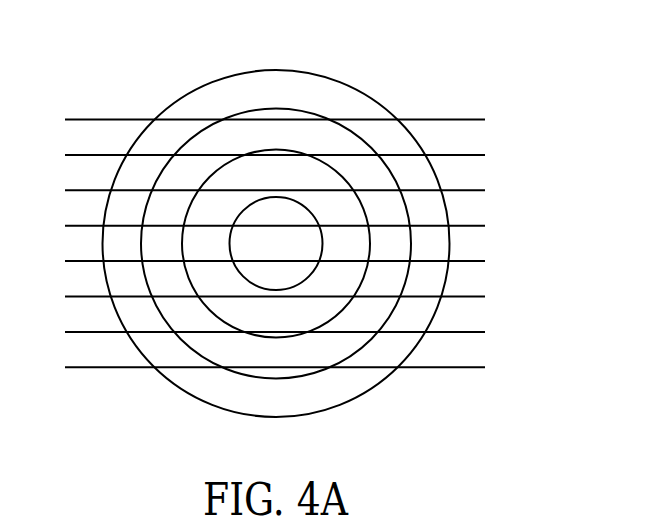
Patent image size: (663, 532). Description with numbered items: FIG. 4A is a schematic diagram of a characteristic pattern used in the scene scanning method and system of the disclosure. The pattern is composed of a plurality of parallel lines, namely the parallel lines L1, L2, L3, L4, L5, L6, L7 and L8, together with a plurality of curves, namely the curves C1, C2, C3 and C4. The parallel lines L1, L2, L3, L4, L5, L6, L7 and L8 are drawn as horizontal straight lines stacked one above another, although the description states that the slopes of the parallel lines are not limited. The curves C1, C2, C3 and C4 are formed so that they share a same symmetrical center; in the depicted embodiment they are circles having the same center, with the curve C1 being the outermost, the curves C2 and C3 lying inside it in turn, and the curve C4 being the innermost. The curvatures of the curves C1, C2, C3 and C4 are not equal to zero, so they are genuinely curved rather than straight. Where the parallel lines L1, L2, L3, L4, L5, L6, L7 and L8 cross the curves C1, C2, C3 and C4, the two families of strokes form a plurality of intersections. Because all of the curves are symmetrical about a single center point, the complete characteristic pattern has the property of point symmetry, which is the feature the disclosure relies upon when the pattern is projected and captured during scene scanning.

The curve C1 is at (337, 78).
The curve C2 is at (278, 108).
The curve C3 is at (263, 149).
The curve C4 is at (238, 213).
The parallel line L1 is at (477, 120).
The parallel line L2 is at (477, 155).
The parallel line L3 is at (477, 190).
The parallel line L4 is at (477, 226).
The parallel line L5 is at (477, 261).
The parallel line L6 is at (477, 296).
The parallel line L7 is at (477, 332).
The parallel line L8 is at (477, 367).